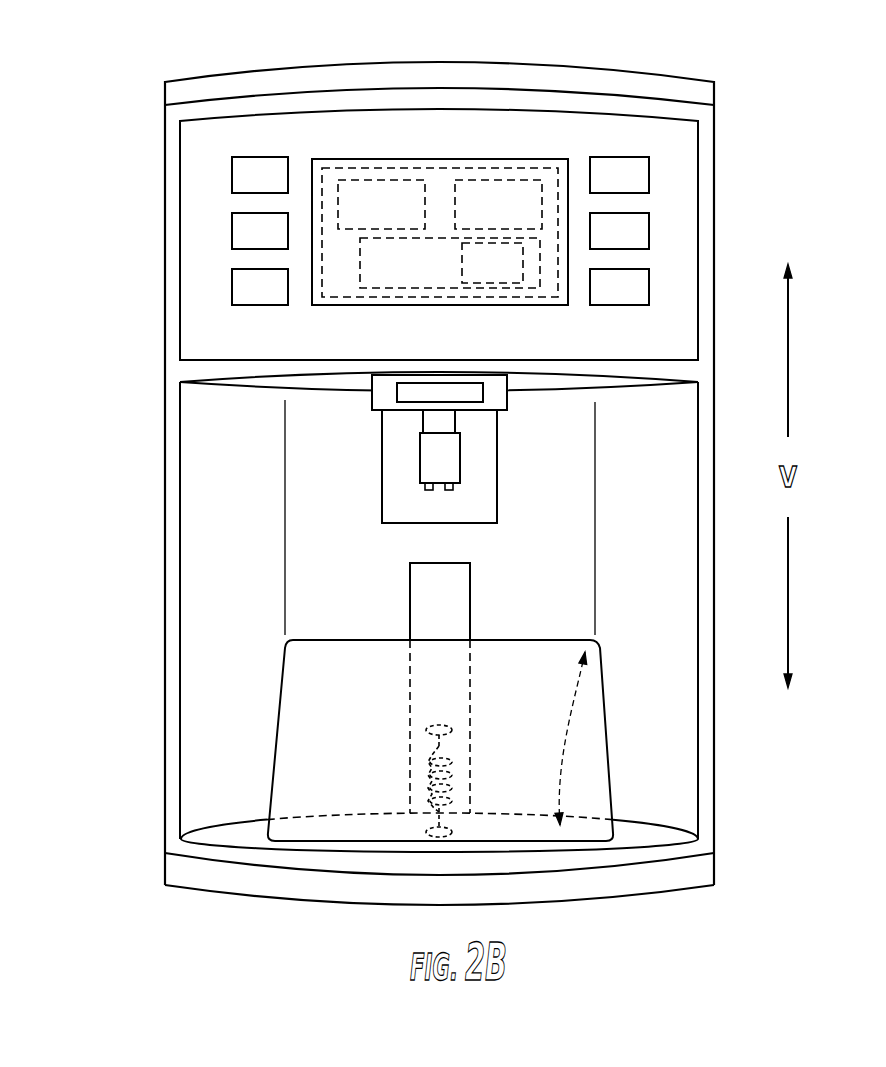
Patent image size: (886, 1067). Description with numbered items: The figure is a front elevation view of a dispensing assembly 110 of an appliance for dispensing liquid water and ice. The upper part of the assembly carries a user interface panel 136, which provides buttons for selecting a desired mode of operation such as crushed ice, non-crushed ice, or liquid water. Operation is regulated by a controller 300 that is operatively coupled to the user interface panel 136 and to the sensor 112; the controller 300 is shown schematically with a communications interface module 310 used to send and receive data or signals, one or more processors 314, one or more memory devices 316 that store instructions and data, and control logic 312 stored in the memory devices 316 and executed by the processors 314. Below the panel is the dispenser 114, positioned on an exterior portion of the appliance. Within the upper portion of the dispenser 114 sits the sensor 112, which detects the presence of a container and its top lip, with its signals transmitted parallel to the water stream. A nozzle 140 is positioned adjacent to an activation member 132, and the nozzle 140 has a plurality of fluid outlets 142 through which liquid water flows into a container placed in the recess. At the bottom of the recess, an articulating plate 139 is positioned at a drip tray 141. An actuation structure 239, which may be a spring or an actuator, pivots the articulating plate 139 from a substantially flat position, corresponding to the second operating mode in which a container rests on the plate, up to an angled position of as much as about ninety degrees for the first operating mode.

The dispensing assembly 110 is at (133, 45).
The controller 300 is at (440, 152).
The communications interface module 310 is at (399, 218).
The processors 314 is at (515, 218).
The memory devices 316 is at (424, 275).
The control logic 312 is at (510, 275).
The user interface panel 136 is at (198, 199).
The sensor 112 is at (395, 393).
The activation member 132 is at (395, 480).
The nozzle 140 is at (450, 458).
The fluid outlets 142 is at (428, 492).
The articulating plate 139 is at (300, 683).
The actuation structure 239 is at (427, 772).
The dispenser 114 is at (247, 762).
The drip tray 141 is at (625, 835).